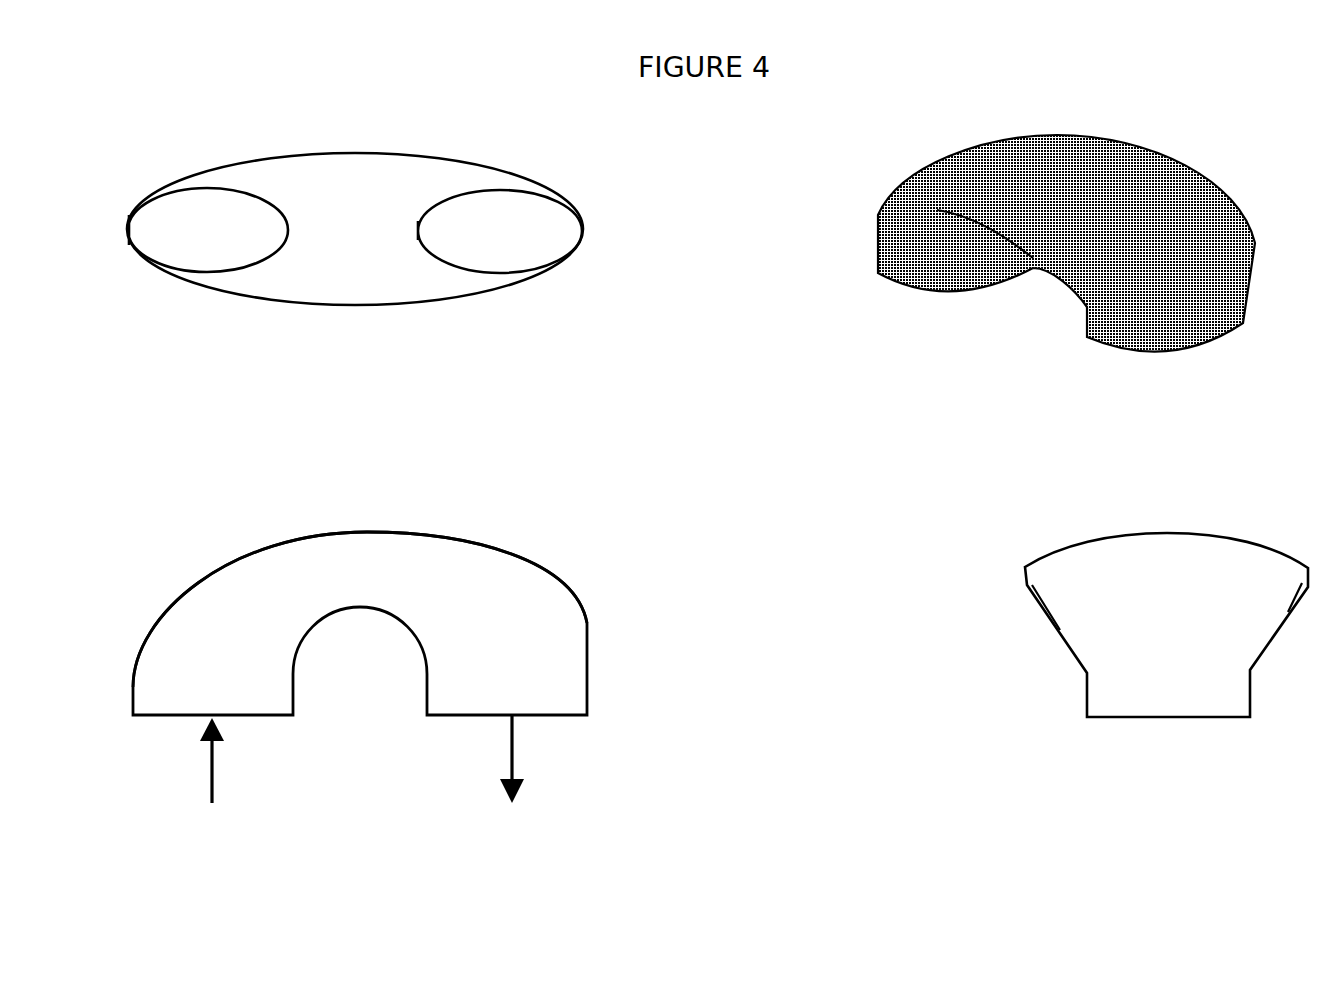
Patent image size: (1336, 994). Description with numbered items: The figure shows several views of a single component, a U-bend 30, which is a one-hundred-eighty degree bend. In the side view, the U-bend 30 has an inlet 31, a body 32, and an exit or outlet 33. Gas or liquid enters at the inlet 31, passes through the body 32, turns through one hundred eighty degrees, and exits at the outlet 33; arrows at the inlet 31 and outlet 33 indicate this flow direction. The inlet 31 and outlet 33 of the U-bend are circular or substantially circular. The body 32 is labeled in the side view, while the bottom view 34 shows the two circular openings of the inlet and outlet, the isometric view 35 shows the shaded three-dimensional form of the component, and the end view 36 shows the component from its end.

The U-bend 30 is at (253, 587).
The inlet 31 is at (176, 769).
The body 32 is at (438, 555).
The outlet 33 is at (556, 767).
The bottom view 34 is at (225, 182).
The isometric view 35 is at (935, 257).
The end view 36 is at (1123, 572).